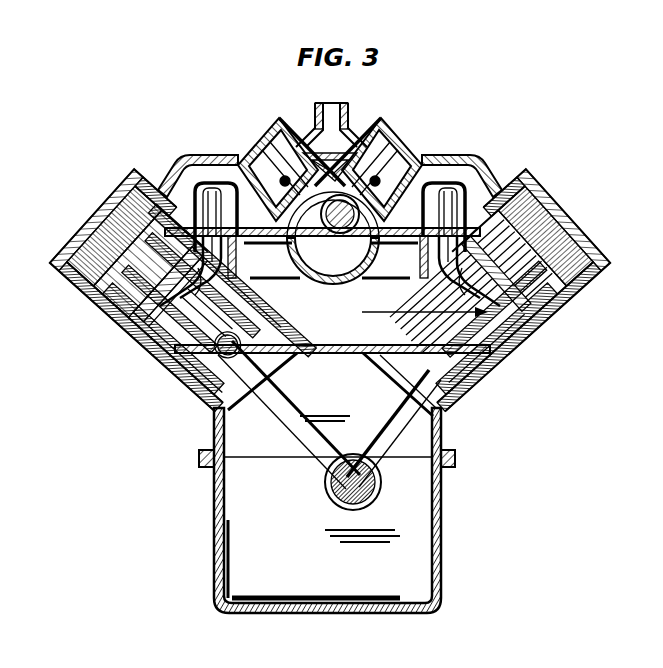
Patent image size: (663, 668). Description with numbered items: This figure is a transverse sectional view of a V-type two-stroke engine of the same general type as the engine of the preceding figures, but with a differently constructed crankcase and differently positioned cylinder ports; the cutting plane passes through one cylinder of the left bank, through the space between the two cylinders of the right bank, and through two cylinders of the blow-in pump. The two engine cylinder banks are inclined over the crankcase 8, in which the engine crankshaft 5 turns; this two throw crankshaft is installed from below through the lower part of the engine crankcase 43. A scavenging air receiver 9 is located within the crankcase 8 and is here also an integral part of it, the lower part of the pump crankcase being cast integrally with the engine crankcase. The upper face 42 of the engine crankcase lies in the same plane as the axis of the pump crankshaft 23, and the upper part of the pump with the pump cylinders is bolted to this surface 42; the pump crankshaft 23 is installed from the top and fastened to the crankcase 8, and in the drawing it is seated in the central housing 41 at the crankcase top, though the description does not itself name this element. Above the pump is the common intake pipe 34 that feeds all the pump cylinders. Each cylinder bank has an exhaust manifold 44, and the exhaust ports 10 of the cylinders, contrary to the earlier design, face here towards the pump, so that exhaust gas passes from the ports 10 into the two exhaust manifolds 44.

The two throw crankshaft 5 is at (382, 489).
The crankcase 8 is at (215, 437).
The scavenging air receiver 9 is at (329, 354).
The exhaust ports 10 is at (197, 268).
The pump crankshaft 23 is at (348, 224).
The common intake pipe 34 is at (348, 133).
The camshaft housing 41 is at (313, 270).
The upper face of the engine crankcase 42 is at (411, 236).
The lower part of the engine crankcase 43 is at (218, 527).
The exhaust manifolds 44 is at (213, 182).